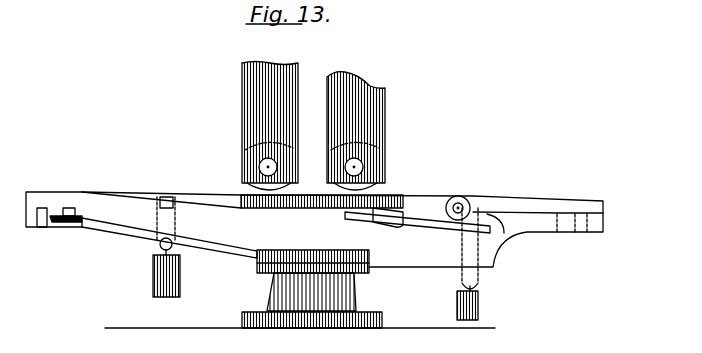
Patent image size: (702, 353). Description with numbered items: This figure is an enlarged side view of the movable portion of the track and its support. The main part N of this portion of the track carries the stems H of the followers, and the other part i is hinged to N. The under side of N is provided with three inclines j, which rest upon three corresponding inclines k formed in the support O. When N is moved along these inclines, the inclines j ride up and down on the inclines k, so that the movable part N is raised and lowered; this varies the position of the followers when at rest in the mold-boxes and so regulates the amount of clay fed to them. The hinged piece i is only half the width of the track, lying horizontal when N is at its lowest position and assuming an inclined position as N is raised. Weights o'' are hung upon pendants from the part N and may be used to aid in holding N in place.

The stems of the follower H is at (241, 133).
The hinged part of the track i is at (314, 221).
The main part of the movable track portion N is at (450, 198).
The inclines j is at (235, 214).
The inclines k is at (286, 235).
The support O is at (328, 285).
The weights o'' is at (327, 258).